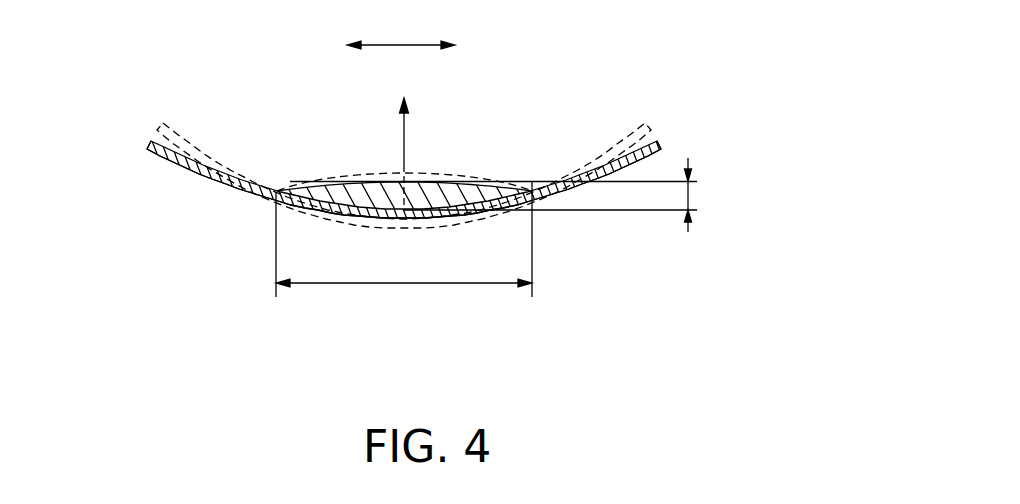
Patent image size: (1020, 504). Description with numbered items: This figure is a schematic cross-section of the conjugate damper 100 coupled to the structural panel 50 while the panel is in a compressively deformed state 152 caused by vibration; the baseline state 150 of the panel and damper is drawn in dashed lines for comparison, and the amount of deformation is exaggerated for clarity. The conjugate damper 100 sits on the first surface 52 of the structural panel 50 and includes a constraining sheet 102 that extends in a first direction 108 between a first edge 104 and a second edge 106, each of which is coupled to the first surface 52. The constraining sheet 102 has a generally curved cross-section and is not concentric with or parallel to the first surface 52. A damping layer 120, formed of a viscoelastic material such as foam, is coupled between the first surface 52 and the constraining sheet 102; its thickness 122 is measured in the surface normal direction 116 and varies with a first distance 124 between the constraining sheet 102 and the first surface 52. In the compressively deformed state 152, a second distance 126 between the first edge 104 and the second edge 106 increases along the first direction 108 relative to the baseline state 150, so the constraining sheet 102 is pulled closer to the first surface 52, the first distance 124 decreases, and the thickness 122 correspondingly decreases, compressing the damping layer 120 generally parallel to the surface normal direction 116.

The structural panel 50 is at (656, 142).
The first surface 52 is at (151, 142).
The conjugate damper 100 is at (421, 181).
The constraining sheet 102 is at (287, 191).
The first edge 104 is at (278, 191).
The second edge 106 is at (532, 190).
The first direction 108 is at (389, 44).
The surface normal direction 116 is at (414, 135).
The damping layer 120 is at (359, 182).
The thickness 122 is at (689, 196).
The first distance 124 is at (550, 196).
The second distance 126 is at (398, 285).
The baseline state 150 is at (300, 223).
The compressively deformed state 152 is at (166, 177).